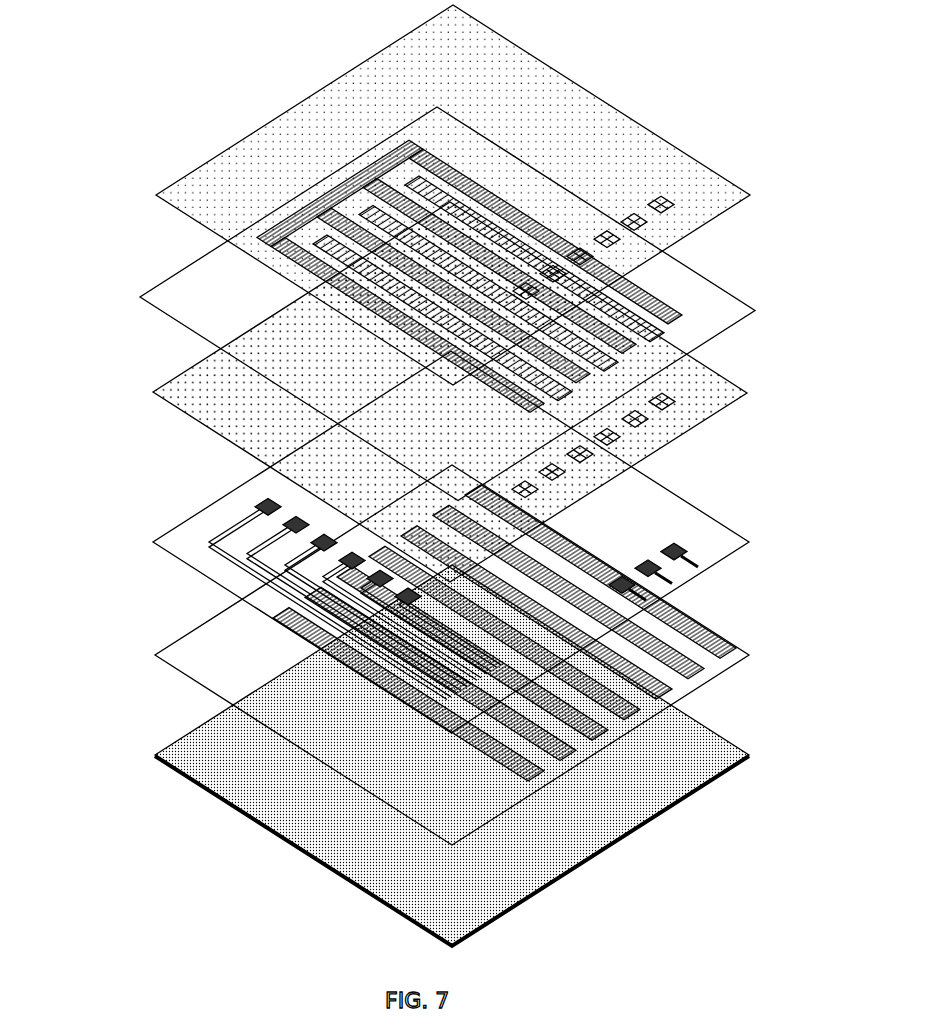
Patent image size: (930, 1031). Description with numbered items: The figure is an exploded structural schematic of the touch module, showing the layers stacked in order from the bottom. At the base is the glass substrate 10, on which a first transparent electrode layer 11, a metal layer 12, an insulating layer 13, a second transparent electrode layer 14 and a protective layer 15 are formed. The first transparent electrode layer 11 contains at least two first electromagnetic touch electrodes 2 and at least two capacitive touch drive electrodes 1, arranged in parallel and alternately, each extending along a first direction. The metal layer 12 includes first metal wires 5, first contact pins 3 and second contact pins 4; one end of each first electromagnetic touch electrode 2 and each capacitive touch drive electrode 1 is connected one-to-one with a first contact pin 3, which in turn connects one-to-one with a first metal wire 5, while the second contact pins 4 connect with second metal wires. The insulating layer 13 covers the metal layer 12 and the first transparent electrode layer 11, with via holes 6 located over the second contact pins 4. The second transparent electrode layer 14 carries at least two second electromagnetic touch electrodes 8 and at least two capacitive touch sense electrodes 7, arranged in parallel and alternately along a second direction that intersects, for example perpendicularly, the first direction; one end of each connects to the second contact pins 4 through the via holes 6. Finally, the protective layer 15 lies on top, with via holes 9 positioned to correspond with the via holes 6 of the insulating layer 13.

The capacitive touch drive electrodes 1 is at (659, 651).
The first electromagnetic touch electrodes 2 is at (636, 694).
The first contact pins 3 is at (292, 573).
The second contact pins 4 is at (694, 557).
The first metal wires 5 is at (290, 607).
The via holes 6 is at (628, 440).
The capacitive touch sense electrodes 7 is at (661, 342).
The second electromagnetic touch electrodes 8 is at (658, 296).
The via holes 9 is at (684, 212).
The glass substrate 10 is at (174, 785).
The first transparent electrode layer 11 is at (259, 664).
The metal layer 12 is at (242, 537).
The insulating layer 13 is at (250, 444).
The second transparent electrode layer 14 is at (220, 288).
The protective layer 15 is at (204, 190).